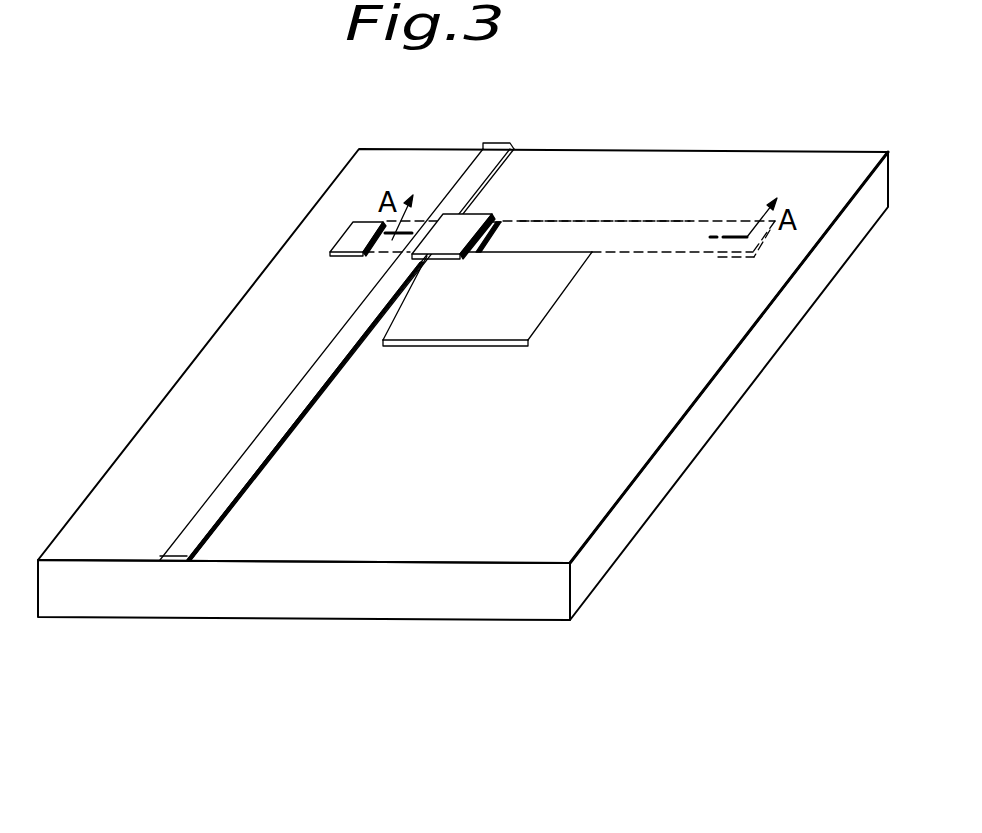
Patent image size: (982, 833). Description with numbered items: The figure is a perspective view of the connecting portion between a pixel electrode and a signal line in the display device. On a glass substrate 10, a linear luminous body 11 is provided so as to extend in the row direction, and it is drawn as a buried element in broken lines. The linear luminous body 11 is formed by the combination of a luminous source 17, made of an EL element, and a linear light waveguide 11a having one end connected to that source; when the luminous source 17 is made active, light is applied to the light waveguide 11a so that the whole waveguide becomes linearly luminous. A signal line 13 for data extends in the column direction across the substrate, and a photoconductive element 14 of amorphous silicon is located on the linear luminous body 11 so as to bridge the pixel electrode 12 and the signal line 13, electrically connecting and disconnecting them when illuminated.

The glass substrate 10 is at (676, 390).
The linear luminous body 11 is at (697, 221).
The linear light waveguide 11a is at (585, 223).
The pixel electrode 12 is at (480, 326).
The signal line 13 is at (487, 152).
The photoconductive element 14 is at (471, 216).
The luminous source 17 is at (354, 234).